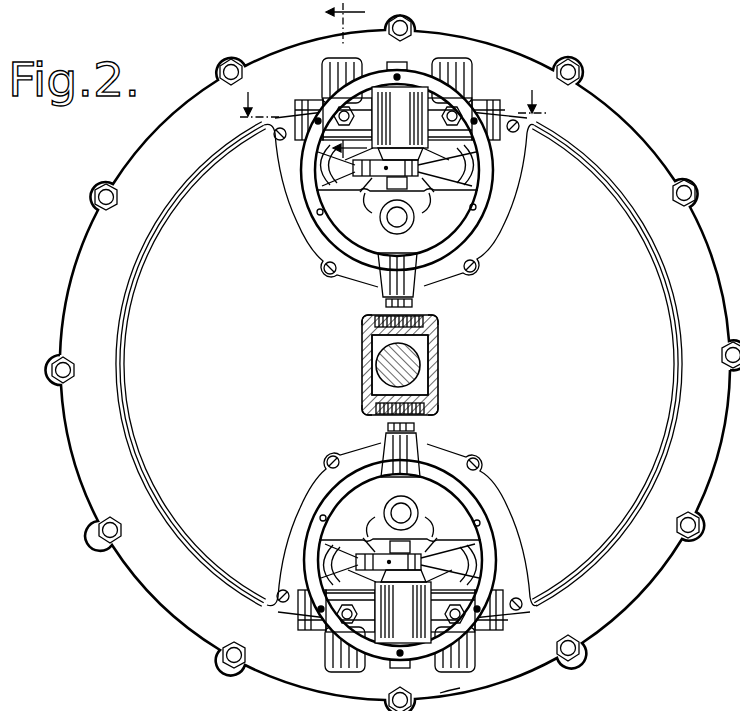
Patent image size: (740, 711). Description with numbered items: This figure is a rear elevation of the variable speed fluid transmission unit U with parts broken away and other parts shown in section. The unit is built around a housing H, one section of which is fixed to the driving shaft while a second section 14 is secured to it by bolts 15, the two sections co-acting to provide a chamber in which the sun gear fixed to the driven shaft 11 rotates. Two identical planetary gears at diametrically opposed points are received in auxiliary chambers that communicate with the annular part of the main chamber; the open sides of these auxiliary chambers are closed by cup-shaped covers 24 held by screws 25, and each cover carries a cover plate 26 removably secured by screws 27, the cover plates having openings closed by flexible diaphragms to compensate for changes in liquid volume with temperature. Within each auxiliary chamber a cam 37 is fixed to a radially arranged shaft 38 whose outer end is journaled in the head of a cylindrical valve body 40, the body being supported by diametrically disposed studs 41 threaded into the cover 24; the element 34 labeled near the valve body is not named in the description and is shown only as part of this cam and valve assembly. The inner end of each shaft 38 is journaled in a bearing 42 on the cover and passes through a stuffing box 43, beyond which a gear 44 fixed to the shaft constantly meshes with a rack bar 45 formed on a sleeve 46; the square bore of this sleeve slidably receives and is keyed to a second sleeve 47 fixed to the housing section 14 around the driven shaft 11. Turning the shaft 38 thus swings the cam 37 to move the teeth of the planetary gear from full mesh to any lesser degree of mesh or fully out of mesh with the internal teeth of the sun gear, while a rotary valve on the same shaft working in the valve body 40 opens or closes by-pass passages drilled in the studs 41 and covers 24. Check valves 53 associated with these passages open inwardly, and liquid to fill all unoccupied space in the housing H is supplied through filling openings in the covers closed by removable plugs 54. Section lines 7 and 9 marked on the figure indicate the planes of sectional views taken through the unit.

The section line 7- 7 is at (394, 92).
The section line 9- 9 is at (336, 90).
The driven shaft 11 is at (414, 360).
The second section 14 is at (630, 596).
The bolts 15 is at (581, 72).
The cup-shaped covers 24 is at (488, 229).
The screws 25 is at (477, 265).
The cover plates 26 is at (337, 228).
The screws 27 is at (316, 213).
The armature 34 is at (425, 160).
The cam 37 is at (379, 199).
The shaft 38 is at (422, 188).
The cylindrical valve body 40 is at (397, 97).
The studs 41 is at (533, 575).
The bearing 42 is at (420, 282).
The stuffing box 43 is at (386, 302).
The gear 44 is at (424, 321).
The rack bar 45 is at (367, 321).
The sleeve 46 is at (440, 375).
The second sleeve 47 is at (378, 347).
The check valves 53 is at (340, 112).
The removable plugs 54 is at (455, 695).
The variable speed fluid transmission unit U is at (660, 146).
The housing H is at (163, 603).